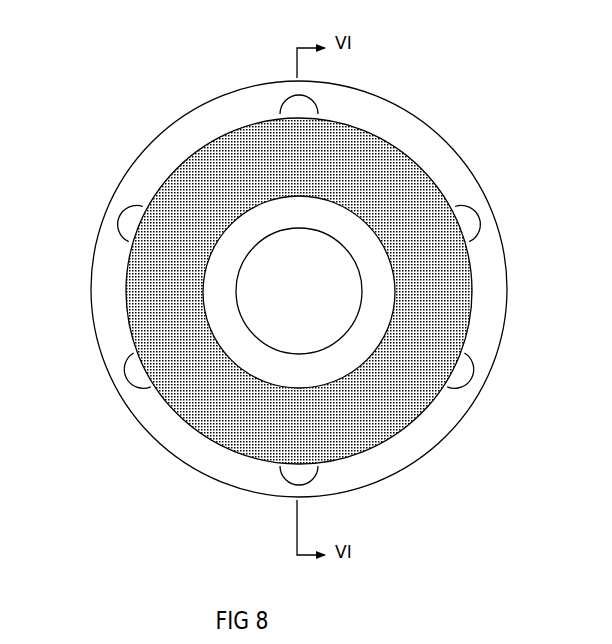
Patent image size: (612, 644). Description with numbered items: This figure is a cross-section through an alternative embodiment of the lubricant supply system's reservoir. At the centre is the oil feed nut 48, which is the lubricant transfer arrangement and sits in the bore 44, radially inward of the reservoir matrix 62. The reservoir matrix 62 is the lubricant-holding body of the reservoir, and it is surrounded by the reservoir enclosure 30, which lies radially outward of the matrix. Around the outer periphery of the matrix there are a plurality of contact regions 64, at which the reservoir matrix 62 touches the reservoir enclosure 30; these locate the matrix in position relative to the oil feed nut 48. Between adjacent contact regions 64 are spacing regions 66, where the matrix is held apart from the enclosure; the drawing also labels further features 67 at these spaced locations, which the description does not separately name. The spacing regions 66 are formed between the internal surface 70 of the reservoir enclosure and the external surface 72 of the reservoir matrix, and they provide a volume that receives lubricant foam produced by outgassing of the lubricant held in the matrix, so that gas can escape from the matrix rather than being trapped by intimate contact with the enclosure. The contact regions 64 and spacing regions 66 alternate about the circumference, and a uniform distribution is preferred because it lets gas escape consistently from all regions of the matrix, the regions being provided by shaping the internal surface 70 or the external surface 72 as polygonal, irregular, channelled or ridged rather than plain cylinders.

The reservoir enclosure 30 is at (479, 186).
The bore 44 is at (368, 335).
The oil feed nut 48 is at (303, 297).
The reservoir matrix 62 is at (443, 297).
The contact regions 64 is at (383, 124).
The spacing regions 66 is at (283, 106).
The notches 67 is at (313, 108).
The internal surface 70 is at (177, 187).
The external surface 72 is at (150, 199).